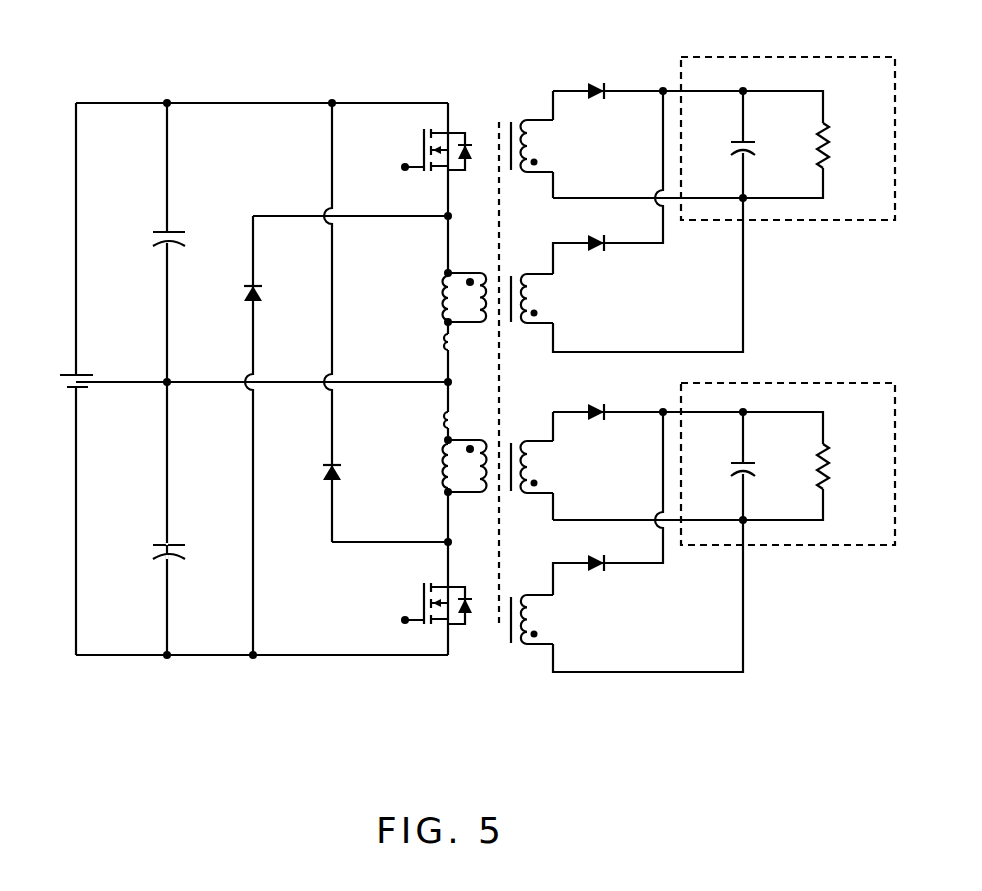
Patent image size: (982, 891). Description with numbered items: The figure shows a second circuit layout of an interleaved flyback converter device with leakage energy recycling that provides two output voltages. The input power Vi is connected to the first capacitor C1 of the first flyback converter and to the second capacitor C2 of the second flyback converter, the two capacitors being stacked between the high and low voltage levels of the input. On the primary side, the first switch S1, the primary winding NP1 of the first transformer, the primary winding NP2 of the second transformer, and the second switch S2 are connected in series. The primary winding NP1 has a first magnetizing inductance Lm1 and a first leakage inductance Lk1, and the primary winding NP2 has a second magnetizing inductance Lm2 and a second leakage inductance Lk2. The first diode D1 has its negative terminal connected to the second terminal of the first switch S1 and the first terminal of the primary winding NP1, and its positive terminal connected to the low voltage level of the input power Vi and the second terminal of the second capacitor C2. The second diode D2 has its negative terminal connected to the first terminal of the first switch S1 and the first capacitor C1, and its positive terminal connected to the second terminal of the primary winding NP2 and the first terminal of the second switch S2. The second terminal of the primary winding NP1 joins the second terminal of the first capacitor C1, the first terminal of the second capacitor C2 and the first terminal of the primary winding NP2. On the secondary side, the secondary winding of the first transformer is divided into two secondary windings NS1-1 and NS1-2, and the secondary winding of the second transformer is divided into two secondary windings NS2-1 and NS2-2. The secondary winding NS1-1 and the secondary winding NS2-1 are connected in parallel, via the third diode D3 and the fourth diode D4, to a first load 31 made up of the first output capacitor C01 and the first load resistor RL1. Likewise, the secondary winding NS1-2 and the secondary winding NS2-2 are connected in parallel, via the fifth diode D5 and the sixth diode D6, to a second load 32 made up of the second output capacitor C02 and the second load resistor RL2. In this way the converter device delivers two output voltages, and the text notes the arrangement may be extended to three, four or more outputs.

The first load 31 is at (779, 183).
The second load 32 is at (779, 511).
The input power Vi is at (59, 380).
The first capacitor C1 is at (155, 237).
The second capacitor C2 is at (155, 547).
The first diode D1 is at (242, 291).
The second diode D2 is at (322, 472).
The first switch S1 is at (424, 153).
The second switch S2 is at (424, 605).
The first magnetizing inductance Lm1 is at (422, 286).
The second magnetizing inductance Lm2 is at (422, 483).
The first leakage inductance Lk1 is at (423, 355).
The second leakage inductance Lk2 is at (423, 411).
The primary winding of the first transformer NP1 is at (478, 315).
The primary winding of the second transformer NP2 is at (474, 485).
The secondary winding of the first transformer NS1-1 is at (568, 147).
The secondary winding of the second transformer NS2-1 is at (568, 300).
The secondary winding of the first transformer NS1-2 is at (568, 467).
The secondary winding of the second transformer NS2-2 is at (568, 620).
The third diode D3 is at (602, 109).
The fourth diode D4 is at (602, 264).
The fifth diode D5 is at (602, 430).
The sixth diode D6 is at (602, 582).
The first output capacitor C01 is at (724, 144).
The second output capacitor C02 is at (719, 466).
The first load resistor RL1 is at (848, 145).
The second load resistor RL2 is at (848, 466).